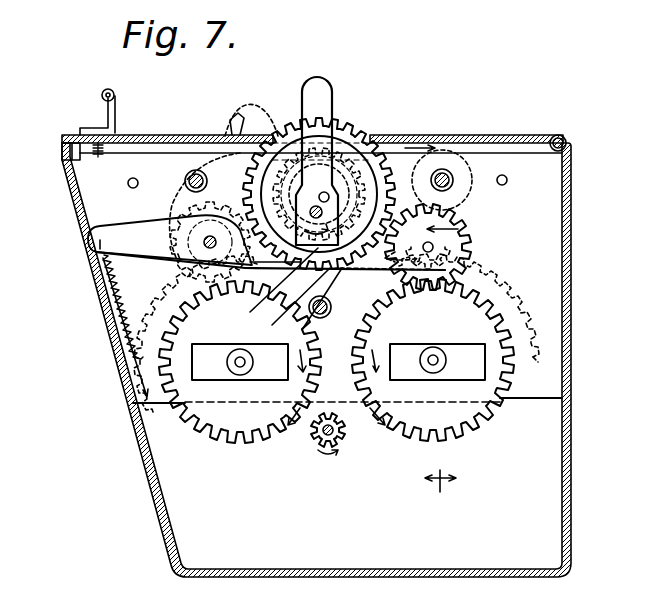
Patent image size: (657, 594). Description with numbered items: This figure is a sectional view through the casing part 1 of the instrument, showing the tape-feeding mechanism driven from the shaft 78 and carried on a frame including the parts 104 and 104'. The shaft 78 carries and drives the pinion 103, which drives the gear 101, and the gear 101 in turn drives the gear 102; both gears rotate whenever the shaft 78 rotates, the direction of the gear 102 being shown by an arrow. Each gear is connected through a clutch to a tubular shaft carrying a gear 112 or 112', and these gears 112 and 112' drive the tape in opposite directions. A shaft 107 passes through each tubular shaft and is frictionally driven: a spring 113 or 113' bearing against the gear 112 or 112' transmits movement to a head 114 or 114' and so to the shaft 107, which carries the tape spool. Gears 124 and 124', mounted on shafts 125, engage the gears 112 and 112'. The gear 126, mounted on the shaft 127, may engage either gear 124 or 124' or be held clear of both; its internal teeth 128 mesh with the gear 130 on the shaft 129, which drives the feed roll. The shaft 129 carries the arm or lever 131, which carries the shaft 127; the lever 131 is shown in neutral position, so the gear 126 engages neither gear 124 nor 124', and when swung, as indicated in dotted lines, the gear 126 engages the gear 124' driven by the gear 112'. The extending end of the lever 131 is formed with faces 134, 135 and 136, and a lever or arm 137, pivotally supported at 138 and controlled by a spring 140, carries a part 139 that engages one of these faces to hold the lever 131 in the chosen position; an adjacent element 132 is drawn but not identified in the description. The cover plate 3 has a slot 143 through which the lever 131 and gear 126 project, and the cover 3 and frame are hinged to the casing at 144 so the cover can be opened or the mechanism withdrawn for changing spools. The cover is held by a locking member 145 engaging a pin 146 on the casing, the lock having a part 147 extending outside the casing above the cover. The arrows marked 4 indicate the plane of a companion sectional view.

The casing part 1 is at (571, 442).
The cover plate 3 is at (412, 135).
The direction of movement 4 is at (457, 362).
The shaft 78 is at (325, 447).
The gear 101 is at (300, 452).
The gear 102 is at (478, 437).
The pinion 103 is at (345, 437).
The frame 104 is at (509, 305).
The frame 104' is at (449, 157).
The shaft 107 is at (238, 356).
The gear 112 is at (532, 399).
The gear 112' is at (195, 372).
The spring 113 is at (437, 372).
The spring 113' is at (240, 372).
The head 114 is at (419, 373).
The head 114' is at (226, 374).
The gear 124 is at (470, 248).
The gear 124' is at (186, 223).
The shaft 125 is at (462, 222).
The gear 126 is at (375, 140).
The shaft 127 is at (331, 196).
The internal teeth 128 is at (343, 136).
The shaft 129 is at (275, 196).
The gear 130 is at (421, 214).
The lever 131 is at (322, 88).
The pawl 132 is at (271, 275).
The face 134 is at (275, 284).
The face 135 is at (392, 266).
The face 136 is at (288, 302).
The lever 137 is at (150, 216).
The pivot 138 is at (212, 235).
The part 139 is at (310, 304).
The spring 140 is at (108, 277).
The slot 143 is at (232, 128).
The hinge 144 is at (562, 139).
The locking member 145 is at (63, 151).
The pin 146 is at (99, 157).
The part 147 is at (106, 112).